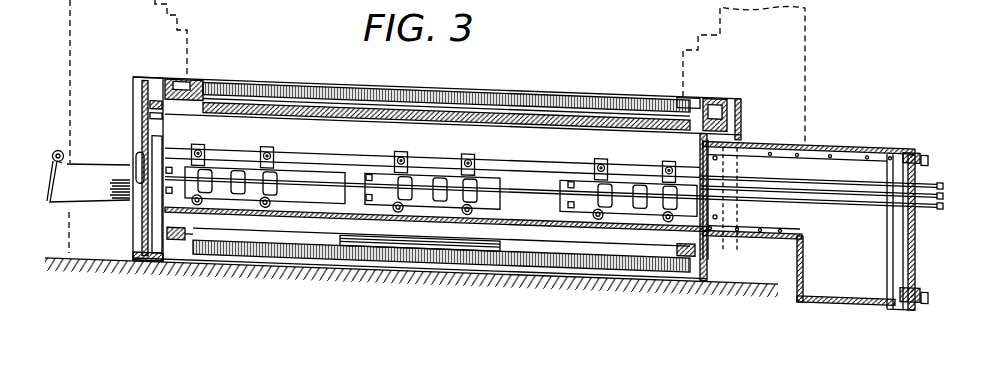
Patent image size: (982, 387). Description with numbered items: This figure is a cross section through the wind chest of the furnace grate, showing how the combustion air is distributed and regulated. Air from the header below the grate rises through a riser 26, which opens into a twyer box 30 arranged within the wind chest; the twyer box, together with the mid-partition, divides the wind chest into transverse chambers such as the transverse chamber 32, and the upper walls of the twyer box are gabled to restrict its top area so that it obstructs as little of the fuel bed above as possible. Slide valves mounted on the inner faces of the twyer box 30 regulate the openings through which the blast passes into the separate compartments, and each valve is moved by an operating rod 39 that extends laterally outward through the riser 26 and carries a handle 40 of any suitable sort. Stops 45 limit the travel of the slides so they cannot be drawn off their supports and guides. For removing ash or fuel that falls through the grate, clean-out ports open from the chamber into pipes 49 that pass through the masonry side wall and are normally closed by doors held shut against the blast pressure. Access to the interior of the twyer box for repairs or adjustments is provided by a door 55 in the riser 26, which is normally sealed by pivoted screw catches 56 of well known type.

The riser 26 is at (809, 224).
The twyer box 30 is at (411, 185).
The transverse chamber 32 is at (46, 183).
The operating rod 39 is at (843, 244).
The handle 40 is at (943, 153).
The stop 45 is at (305, 150).
The pipe 49 is at (88, 181).
The door 55 is at (913, 208).
The pivoted screw catch 56 is at (923, 127).